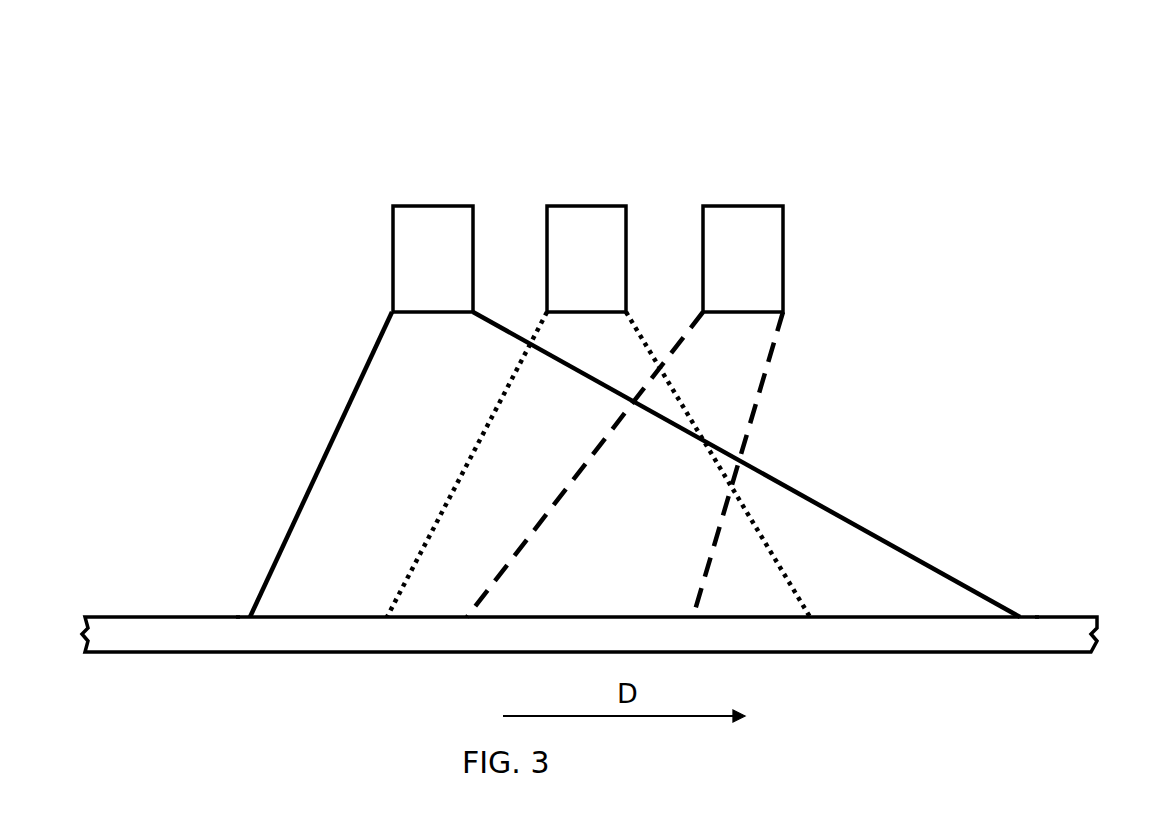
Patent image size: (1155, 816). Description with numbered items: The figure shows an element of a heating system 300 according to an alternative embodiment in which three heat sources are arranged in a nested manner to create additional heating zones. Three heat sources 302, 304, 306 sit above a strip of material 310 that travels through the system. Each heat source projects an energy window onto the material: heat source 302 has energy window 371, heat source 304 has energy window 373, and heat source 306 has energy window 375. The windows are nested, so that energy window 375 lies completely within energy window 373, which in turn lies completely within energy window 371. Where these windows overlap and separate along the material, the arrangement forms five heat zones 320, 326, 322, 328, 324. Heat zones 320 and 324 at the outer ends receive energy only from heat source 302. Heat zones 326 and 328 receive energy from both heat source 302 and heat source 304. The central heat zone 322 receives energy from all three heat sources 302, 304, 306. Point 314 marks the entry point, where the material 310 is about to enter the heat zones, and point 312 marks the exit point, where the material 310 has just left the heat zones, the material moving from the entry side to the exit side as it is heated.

The heating system 300 is at (257, 95).
The heat source 302 is at (428, 227).
The heat source 304 is at (593, 228).
The heat source 306 is at (752, 228).
The material 310 is at (182, 637).
The exit point 312 is at (1037, 617).
The entry point 314 is at (238, 617).
The heat zone 320 is at (325, 581).
The heat zone 322 is at (580, 576).
The heat zone 324 is at (915, 589).
The heat zone 326 is at (446, 564).
The heat zone 328 is at (751, 592).
The energy window 371 is at (334, 435).
The energy window 373 is at (478, 445).
The energy window 375 is at (605, 437).